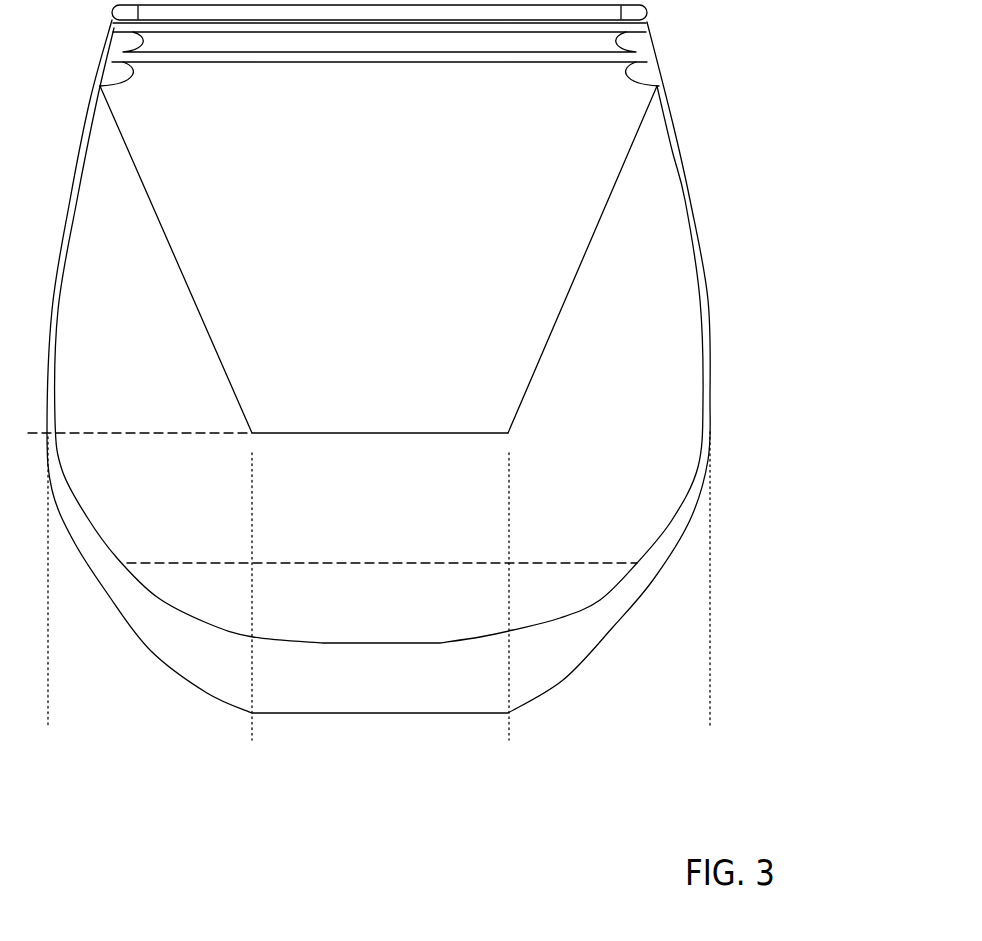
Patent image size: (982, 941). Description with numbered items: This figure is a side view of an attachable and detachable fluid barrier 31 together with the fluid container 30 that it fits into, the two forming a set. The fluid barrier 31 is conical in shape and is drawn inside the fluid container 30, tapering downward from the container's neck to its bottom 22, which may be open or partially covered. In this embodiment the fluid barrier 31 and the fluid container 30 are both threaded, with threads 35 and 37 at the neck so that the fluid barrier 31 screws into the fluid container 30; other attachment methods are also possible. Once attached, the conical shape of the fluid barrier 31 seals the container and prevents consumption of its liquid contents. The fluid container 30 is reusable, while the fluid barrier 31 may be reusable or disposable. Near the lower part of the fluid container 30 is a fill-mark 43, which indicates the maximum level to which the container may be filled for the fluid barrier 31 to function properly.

The bottom 22 is at (378, 436).
The fluid container 30 is at (710, 398).
The fluid barrier 31 is at (398, 240).
The threads 35 is at (638, 79).
The threads 37 is at (648, 32).
The fill-mark 43 is at (678, 552).